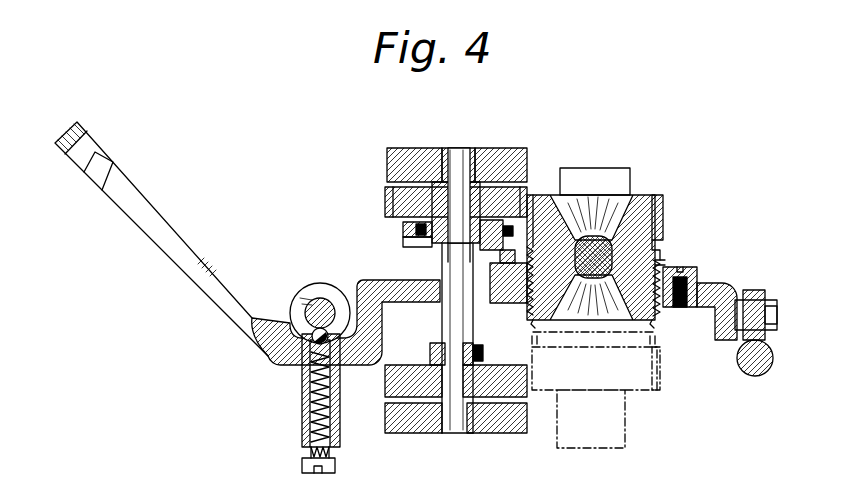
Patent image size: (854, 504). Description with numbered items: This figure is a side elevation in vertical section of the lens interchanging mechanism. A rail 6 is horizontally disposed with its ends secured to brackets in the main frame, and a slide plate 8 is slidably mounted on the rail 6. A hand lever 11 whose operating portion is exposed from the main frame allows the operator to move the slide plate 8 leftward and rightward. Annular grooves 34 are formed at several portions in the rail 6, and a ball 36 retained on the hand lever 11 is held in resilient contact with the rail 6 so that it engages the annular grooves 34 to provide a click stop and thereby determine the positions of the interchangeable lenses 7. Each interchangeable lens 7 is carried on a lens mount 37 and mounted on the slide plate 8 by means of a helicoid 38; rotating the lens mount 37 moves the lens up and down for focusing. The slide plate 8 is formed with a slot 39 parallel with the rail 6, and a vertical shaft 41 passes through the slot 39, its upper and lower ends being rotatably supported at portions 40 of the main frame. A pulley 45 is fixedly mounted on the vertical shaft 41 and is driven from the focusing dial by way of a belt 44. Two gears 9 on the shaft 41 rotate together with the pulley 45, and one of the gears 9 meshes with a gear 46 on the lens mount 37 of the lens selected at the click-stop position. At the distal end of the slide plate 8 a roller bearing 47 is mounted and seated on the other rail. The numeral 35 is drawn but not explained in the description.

The rail 6 is at (303, 288).
The interchangeable lens 7 is at (594, 238).
The slide plate 8 is at (706, 292).
The gear 9 is at (385, 201).
The hand lever 11 is at (171, 258).
The annular groove 34 is at (320, 298).
The spring-loaded plunger 35 is at (305, 386).
The ball 36 is at (299, 322).
The lens mount 37 is at (536, 195).
The helicoid 38 is at (661, 262).
The slot 39 is at (482, 300).
The portion of main frame 40 is at (503, 148).
The vertical shaft 41 is at (457, 148).
The belt 44 is at (402, 231).
The pulley 45 is at (405, 249).
The gear 46 is at (663, 216).
The roller bearing 47 is at (757, 291).